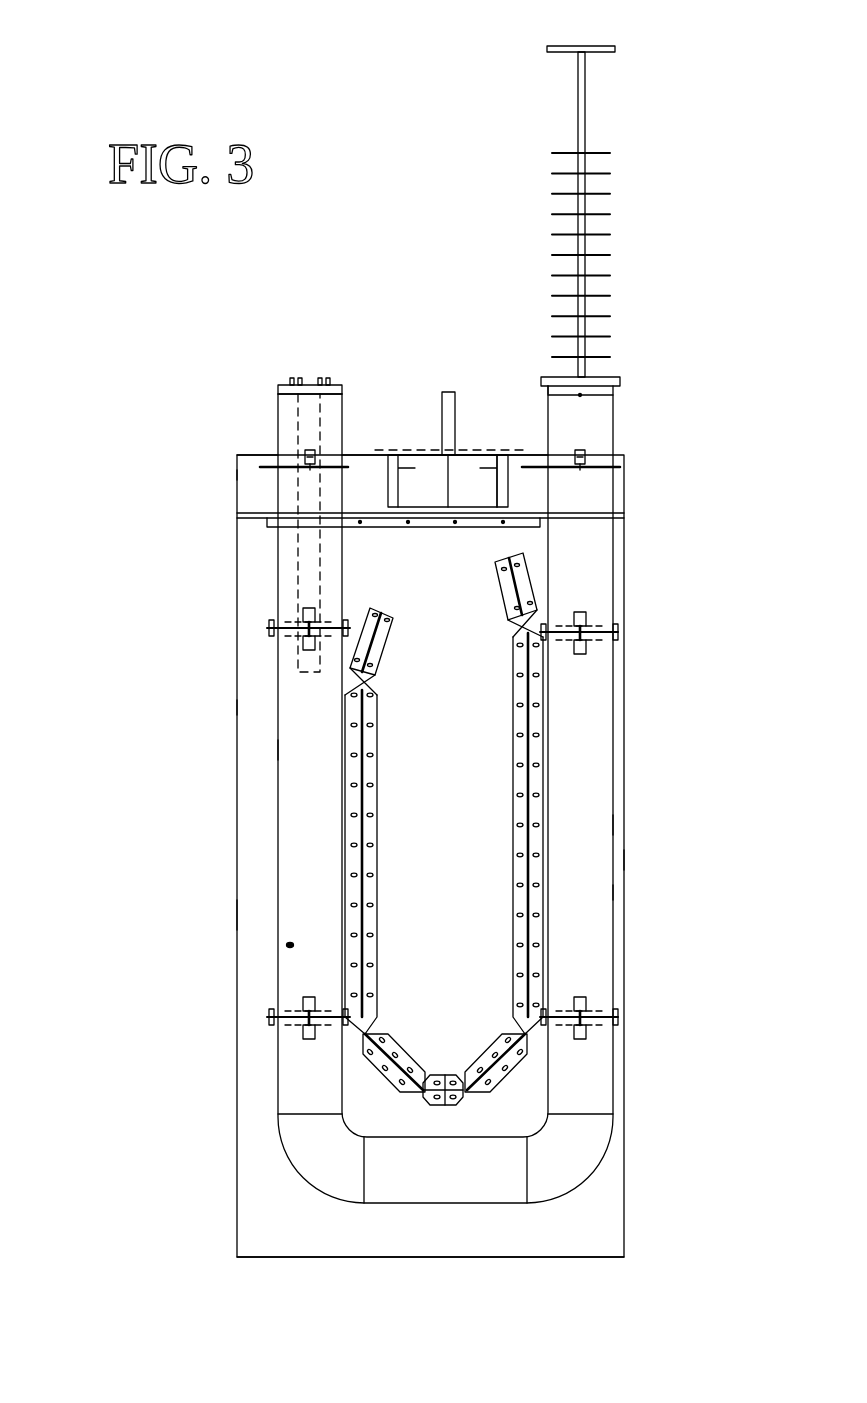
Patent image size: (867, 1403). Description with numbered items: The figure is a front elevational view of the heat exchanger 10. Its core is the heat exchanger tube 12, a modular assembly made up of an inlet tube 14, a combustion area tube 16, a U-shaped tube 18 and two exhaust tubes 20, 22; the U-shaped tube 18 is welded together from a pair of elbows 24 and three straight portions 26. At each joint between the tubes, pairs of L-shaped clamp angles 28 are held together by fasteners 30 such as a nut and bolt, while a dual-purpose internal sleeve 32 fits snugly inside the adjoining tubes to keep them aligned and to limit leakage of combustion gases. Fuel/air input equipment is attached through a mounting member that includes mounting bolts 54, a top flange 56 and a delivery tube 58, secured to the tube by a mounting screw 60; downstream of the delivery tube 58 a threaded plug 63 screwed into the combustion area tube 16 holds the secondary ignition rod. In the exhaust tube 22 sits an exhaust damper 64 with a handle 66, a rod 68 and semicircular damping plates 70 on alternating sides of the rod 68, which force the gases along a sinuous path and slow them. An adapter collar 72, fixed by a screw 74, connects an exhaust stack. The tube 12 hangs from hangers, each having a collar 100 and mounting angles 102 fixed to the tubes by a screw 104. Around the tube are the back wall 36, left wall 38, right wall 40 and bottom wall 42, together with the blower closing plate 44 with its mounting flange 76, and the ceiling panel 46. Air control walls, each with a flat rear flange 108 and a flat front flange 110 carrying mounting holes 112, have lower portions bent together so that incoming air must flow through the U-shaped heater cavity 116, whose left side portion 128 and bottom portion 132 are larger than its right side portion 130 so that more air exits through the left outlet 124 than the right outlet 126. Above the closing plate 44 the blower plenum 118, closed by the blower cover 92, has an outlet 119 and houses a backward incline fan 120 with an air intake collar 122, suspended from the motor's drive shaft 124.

The heat exchanger 10 is at (122, 396).
The heat exchanger tube 12 is at (135, 645).
The inlet tube 14 is at (278, 412).
The combustion area tube 16 is at (290, 727).
The U-shaped tube 18 is at (553, 1213).
The exhaust tube 20 is at (588, 892).
The exhaust tube 22 is at (600, 570).
The elbows 24 is at (318, 1170).
The straight portions 26 is at (285, 1118).
The L-shaped clamp angles 28 is at (303, 612).
The fasteners 30 is at (285, 628).
The internal sleeve 32 is at (290, 645).
The back wall 36 is at (452, 788).
The left wall 38 is at (240, 905).
The right wall 40 is at (625, 862).
The bottom wall 42 is at (610, 1257).
The blower closing plate 44 is at (624, 522).
The ceiling panel 46 is at (262, 470).
The fuel/air input equipment mounting bolts 54 is at (292, 378).
The top flange 56 is at (278, 388).
The delivery tube 58 is at (300, 445).
The mounting screw 60 is at (313, 390).
The threaded plug 63 is at (287, 945).
The exhaust damper 64 is at (506, 122).
The handle 66 is at (555, 50).
The rod 68 is at (576, 80).
The semicircular damping plates 70 is at (560, 174).
The adapter collar 72 is at (620, 382).
The screw 74 is at (580, 398).
The mounting flange 76 is at (538, 527).
The blower cover 92 is at (480, 455).
The collar 100 is at (315, 462).
The mounting angles 102 is at (305, 455).
The screw 104 is at (300, 470).
The flat rear flange 108 is at (350, 857).
The flat front flange 110 is at (362, 765).
The mounting holes 112 is at (354, 792).
The U-shaped heater cavity 116 is at (405, 1228).
The blower plenum 118 is at (265, 516).
The outlet 119 is at (235, 473).
The backward incline fan 120 is at (430, 490).
The air intake venturi or collar 122 is at (560, 518).
The drive shaft 124 is at (450, 393).
The right outlet 126 is at (527, 542).
The left side portion 128 is at (252, 706).
The right side portion 130 is at (620, 825).
The bottom portion 132 is at (358, 1228).